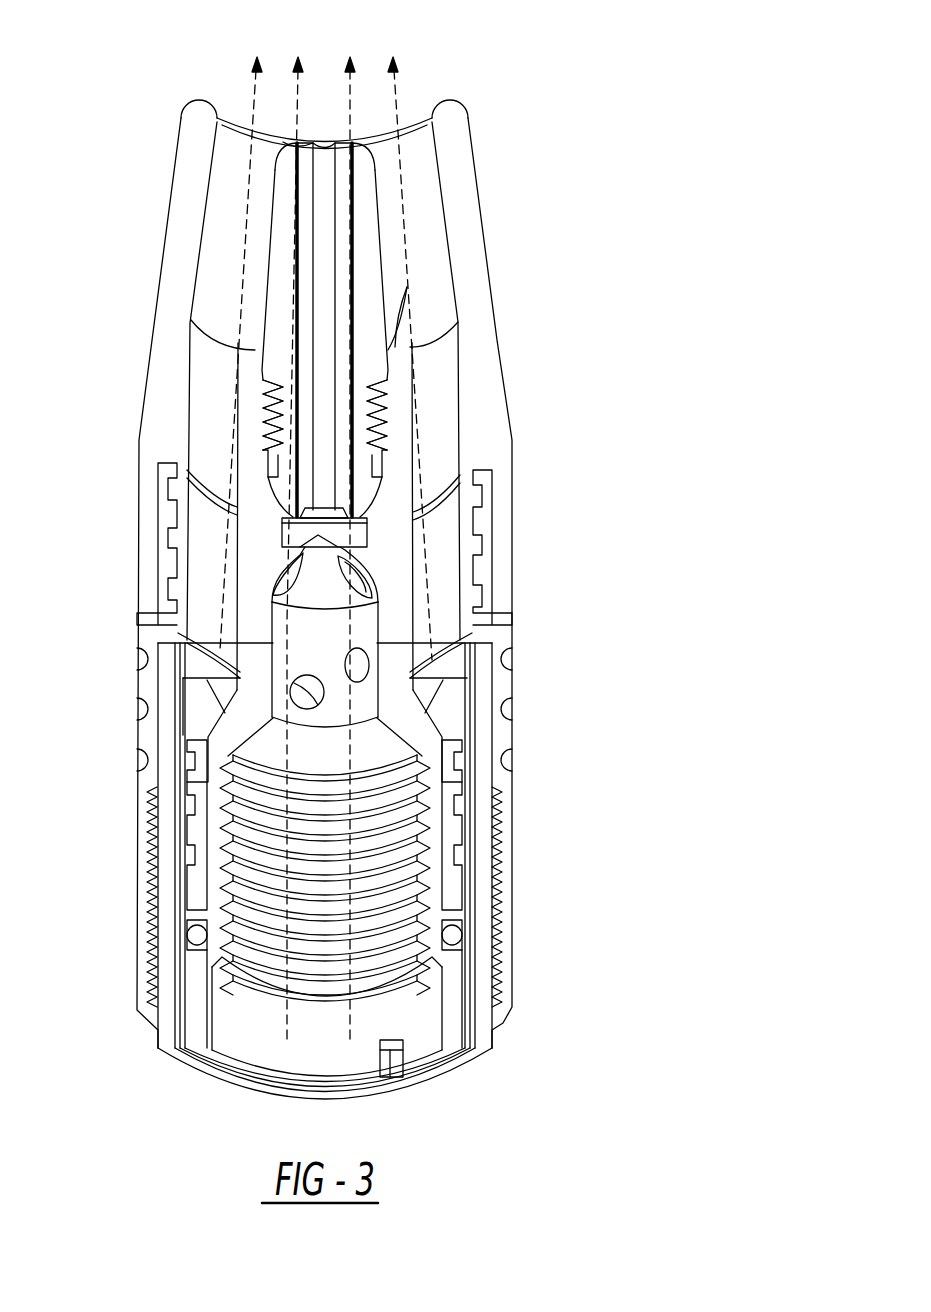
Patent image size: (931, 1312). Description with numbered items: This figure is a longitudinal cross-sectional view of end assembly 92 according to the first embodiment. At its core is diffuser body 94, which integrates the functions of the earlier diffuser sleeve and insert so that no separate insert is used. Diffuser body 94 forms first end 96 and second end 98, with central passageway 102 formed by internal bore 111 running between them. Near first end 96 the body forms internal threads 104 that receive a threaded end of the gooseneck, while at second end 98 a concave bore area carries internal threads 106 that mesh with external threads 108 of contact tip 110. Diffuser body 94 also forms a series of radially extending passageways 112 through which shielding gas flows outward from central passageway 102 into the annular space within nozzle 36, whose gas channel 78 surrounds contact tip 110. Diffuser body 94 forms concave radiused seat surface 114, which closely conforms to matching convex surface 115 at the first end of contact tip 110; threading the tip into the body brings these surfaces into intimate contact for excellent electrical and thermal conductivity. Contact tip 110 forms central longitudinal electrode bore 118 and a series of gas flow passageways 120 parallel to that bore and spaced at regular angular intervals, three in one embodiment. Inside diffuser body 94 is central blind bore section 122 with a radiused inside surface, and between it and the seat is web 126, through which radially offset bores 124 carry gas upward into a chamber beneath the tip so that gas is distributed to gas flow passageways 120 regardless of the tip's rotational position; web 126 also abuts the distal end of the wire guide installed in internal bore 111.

The nozzle 36 is at (193, 165).
The gas channel 78 is at (430, 310).
The end assembly 92 is at (528, 108).
The diffuser body 94 is at (393, 578).
The first end 96 is at (452, 1023).
The second end 98 is at (393, 347).
The central passageway 102 is at (367, 828).
The internal threads 104 is at (407, 897).
The internal threads 106 is at (365, 407).
The external threads 108 is at (370, 440).
The contact tip 110 is at (362, 157).
The internal bore 111 is at (365, 632).
The radially extending passageways 112 is at (282, 660).
The concave radiused seat surface 114 is at (363, 483).
The convex surface 115 is at (285, 515).
The central longitudinal electrode bore 118 is at (330, 222).
The gas flow passageways 120 is at (297, 275).
The central blind bore section 122 is at (277, 594).
The radially offset bores 124 is at (308, 563).
The web 126 is at (333, 540).